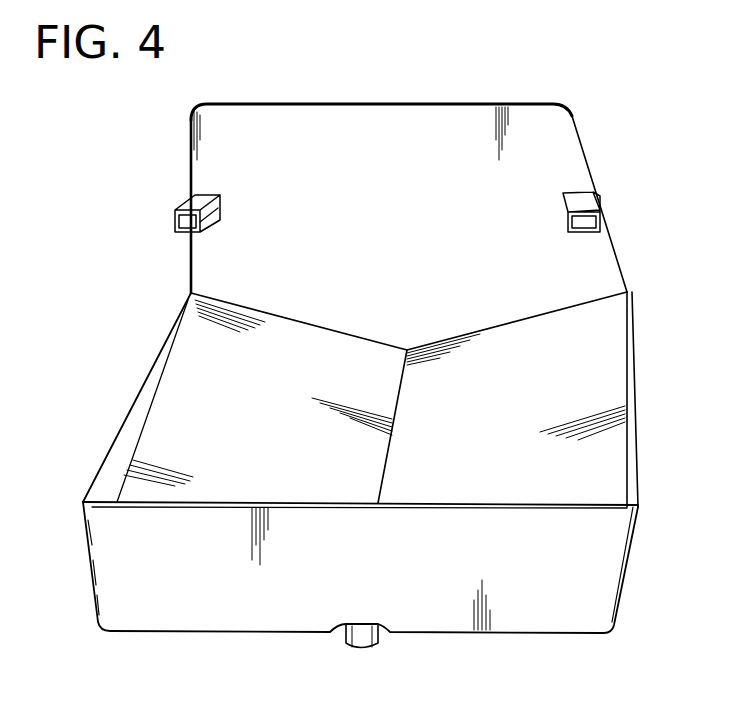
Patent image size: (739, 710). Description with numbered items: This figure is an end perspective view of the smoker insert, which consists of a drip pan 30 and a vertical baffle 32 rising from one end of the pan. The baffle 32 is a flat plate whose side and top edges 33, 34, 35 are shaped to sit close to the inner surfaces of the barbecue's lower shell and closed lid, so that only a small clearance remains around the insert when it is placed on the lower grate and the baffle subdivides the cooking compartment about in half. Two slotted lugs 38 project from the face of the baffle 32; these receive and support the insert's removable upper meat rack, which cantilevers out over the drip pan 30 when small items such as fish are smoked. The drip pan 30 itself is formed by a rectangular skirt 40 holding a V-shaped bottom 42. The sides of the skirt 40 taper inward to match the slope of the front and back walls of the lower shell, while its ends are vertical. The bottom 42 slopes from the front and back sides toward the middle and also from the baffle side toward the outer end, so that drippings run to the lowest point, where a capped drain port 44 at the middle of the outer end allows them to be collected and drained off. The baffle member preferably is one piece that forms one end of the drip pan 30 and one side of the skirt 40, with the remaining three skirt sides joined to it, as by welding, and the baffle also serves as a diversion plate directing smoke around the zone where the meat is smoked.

The drip pan 30 is at (128, 376).
The vertical baffle 32 is at (380, 194).
The side edge of the baffle 33 is at (588, 174).
The top edge of the baffle 34 is at (363, 104).
The side edge of the baffle 35 is at (190, 136).
The slotted lugs 38 is at (212, 196).
The rectangular skirt 40 is at (610, 572).
The V-shaped bottom 42 is at (497, 451).
The capped drain port 44 is at (380, 646).